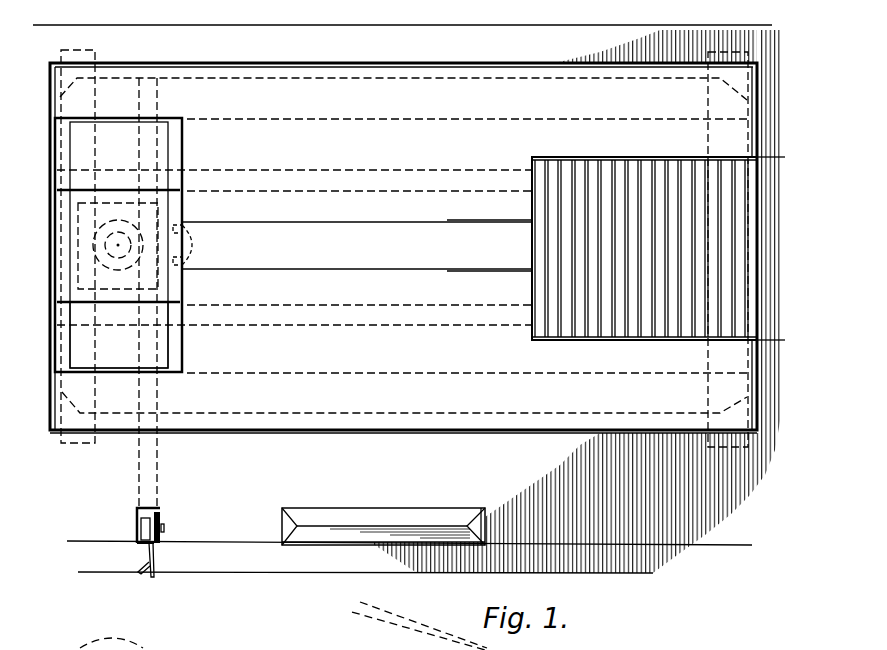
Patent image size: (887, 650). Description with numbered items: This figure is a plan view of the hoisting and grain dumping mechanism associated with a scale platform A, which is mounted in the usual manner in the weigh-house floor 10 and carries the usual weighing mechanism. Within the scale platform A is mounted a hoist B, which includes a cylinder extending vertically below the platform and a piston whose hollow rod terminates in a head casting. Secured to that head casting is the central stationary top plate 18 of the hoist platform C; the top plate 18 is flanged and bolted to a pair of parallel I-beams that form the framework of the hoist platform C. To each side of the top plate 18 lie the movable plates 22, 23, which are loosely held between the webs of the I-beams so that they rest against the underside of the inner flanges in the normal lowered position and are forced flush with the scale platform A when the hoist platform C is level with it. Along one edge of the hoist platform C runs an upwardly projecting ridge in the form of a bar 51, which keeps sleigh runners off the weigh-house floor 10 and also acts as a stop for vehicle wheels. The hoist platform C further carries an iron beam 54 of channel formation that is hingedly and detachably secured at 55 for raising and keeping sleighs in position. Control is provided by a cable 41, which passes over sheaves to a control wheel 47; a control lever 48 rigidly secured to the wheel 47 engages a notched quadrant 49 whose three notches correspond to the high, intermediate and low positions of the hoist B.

The weigh-house floor 10 is at (318, 45).
The scale platform A is at (403, 248).
The hoist B is at (122, 257).
The hoist platform C is at (158, 220).
The central stationary top plate 18 is at (150, 295).
The movable plate 22 is at (127, 357).
The movable plate 23 is at (125, 154).
The cable 41 is at (158, 453).
The control wheel 47 is at (165, 517).
The control lever 48 is at (152, 563).
The quadrant 49 is at (143, 552).
The bar 51 is at (63, 345).
The iron beam 54 is at (392, 235).
The hinge connection 55 is at (197, 253).